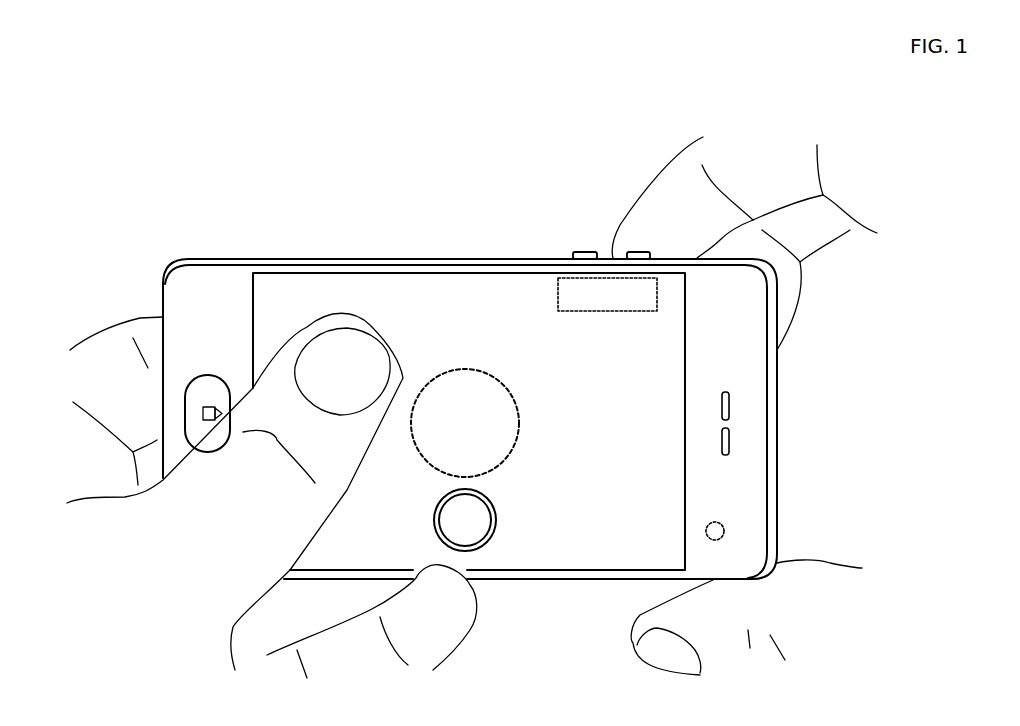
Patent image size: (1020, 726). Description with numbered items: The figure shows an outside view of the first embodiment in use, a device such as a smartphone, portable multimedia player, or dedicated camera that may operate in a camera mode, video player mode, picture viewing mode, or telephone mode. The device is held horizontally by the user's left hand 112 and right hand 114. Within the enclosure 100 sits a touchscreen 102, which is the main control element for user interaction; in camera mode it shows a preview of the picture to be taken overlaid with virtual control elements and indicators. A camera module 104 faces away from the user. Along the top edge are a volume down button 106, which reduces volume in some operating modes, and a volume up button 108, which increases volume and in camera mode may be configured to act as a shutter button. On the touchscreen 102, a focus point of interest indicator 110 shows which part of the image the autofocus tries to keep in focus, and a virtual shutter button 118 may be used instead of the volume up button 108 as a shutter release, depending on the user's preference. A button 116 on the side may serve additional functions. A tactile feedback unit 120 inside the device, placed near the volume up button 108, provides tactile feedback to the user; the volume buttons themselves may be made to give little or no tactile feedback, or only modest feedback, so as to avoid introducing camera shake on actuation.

The enclosure 100 is at (200, 295).
The touchscreen 102 is at (433, 310).
The camera module 104 is at (725, 527).
The volume down button 106 is at (587, 250).
The volume up button 108 is at (638, 250).
The focus point of interest indicator 110 is at (500, 472).
The left hand 112 is at (91, 363).
The right hand 114 is at (827, 227).
The button 116 is at (208, 405).
The virtual shutter button 118 is at (465, 527).
The tactile feedback unit 120 is at (642, 314).